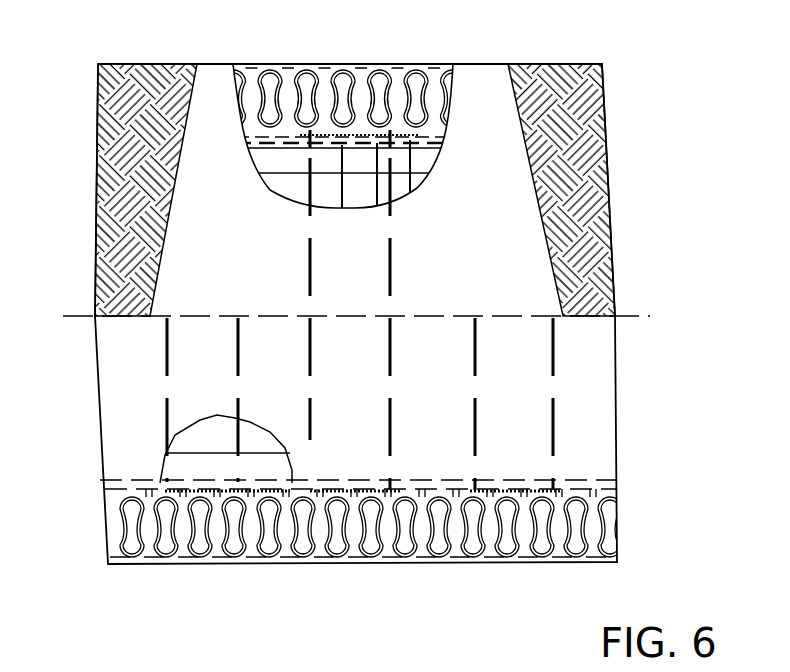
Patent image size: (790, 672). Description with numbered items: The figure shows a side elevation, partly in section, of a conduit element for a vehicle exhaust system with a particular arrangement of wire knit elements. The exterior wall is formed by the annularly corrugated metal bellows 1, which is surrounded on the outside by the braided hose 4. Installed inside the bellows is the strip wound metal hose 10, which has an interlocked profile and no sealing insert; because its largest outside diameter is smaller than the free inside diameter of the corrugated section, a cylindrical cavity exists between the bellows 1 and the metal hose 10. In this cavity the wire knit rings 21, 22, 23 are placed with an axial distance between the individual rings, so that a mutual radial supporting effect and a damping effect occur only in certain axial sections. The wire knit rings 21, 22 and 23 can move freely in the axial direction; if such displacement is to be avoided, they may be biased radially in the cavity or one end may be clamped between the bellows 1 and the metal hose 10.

The metal bellows 1 is at (612, 527).
The braided hose 4 is at (590, 173).
The strip wound metal hose 10 is at (580, 394).
The wire knit ring 21 is at (218, 563).
The wire knit ring 22 is at (347, 72).
The wire knit ring 23 is at (502, 560).